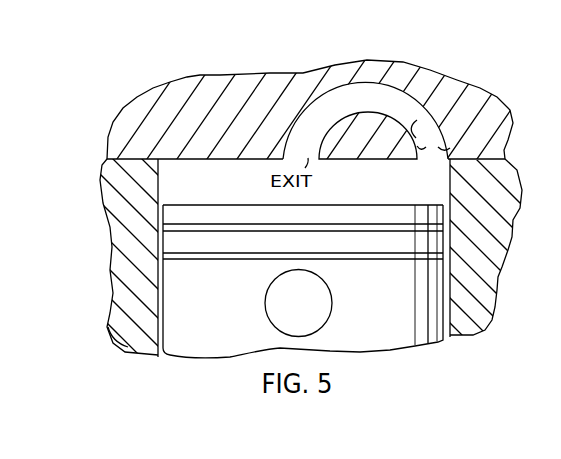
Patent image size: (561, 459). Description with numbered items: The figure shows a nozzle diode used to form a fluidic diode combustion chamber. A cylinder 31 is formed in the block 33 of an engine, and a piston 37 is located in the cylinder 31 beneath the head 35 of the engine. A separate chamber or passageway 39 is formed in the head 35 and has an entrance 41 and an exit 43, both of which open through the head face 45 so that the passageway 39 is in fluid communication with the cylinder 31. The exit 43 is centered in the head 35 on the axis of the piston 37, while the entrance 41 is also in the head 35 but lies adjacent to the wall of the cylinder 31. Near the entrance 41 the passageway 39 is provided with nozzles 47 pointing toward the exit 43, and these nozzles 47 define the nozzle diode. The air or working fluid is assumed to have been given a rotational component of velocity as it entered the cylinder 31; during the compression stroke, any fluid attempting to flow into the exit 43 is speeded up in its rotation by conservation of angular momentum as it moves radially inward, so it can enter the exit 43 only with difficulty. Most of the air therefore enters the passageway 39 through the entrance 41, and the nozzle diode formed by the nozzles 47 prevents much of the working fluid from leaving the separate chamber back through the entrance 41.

The cylinder 31 is at (158, 190).
The block 33 is at (475, 267).
The head 35 is at (182, 110).
The piston 37 is at (433, 317).
The passageway 39 is at (310, 87).
The entrance 41 is at (430, 157).
The exit 43 is at (300, 157).
The head face 45 is at (182, 160).
The nozzles 47 is at (441, 121).